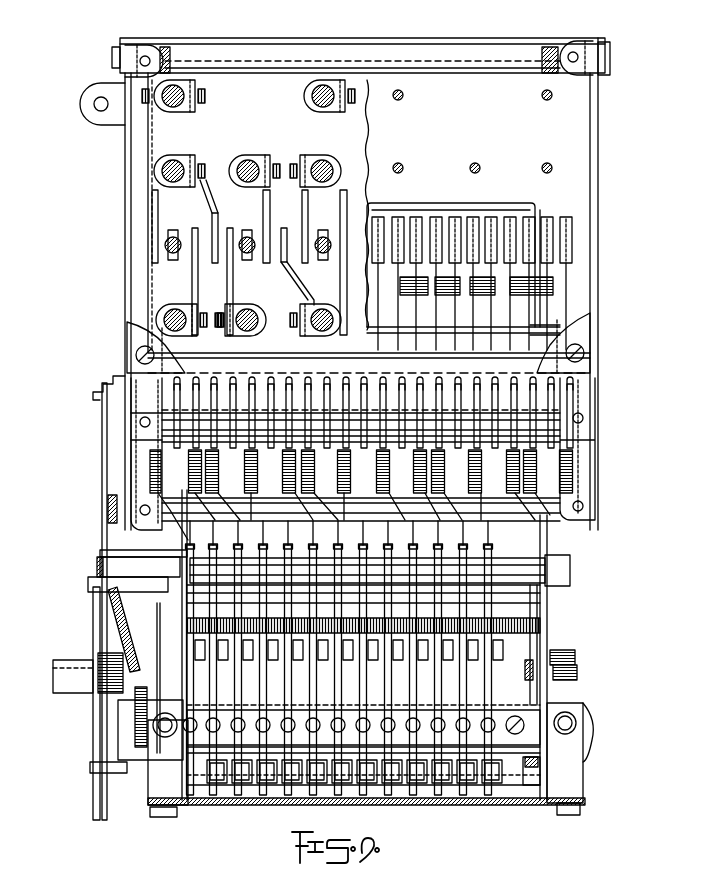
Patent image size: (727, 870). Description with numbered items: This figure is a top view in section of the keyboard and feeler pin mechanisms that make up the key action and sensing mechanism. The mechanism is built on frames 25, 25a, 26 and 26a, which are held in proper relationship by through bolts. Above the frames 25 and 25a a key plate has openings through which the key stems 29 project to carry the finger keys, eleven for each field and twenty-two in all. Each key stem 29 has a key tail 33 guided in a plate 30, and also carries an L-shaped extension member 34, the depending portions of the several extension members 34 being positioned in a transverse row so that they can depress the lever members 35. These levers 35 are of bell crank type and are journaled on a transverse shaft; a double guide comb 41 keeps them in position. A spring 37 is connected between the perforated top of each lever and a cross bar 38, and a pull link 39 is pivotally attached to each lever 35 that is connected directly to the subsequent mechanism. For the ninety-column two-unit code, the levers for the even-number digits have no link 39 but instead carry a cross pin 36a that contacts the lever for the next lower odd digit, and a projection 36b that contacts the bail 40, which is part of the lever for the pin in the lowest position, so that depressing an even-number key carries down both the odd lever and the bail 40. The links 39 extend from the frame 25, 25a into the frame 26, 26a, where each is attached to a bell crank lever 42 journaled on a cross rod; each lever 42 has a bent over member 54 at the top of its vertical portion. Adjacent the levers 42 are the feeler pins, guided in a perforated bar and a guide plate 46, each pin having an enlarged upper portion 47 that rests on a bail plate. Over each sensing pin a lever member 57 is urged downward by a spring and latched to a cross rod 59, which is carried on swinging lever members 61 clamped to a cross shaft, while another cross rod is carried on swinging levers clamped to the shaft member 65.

The frame 25 is at (595, 156).
The frame 25a is at (127, 158).
The frame 26 is at (545, 640).
The frame 26a is at (187, 553).
The key stem 29 is at (312, 165).
The plate 30 is at (247, 82).
The key tail 33 is at (403, 97).
The extension member 34 is at (288, 280).
The lever member 35 is at (450, 330).
The cross pin 36a is at (500, 217).
The projection 36b is at (556, 217).
The spring 37 is at (420, 478).
The cross bar 38 is at (160, 495).
The pull link 39 is at (375, 552).
The bail 40 is at (542, 202).
The double guide comb 41 is at (558, 330).
The bell crank lever 42 is at (478, 768).
The guide plate 46 is at (530, 728).
The enlarged upper portion of feeler pin 47 is at (490, 725).
The bent over member 54 is at (278, 785).
The lever member 57 is at (490, 627).
The cross rod 59 is at (520, 562).
The swinging lever member 61 is at (170, 576).
The shaft member 65 is at (127, 637).